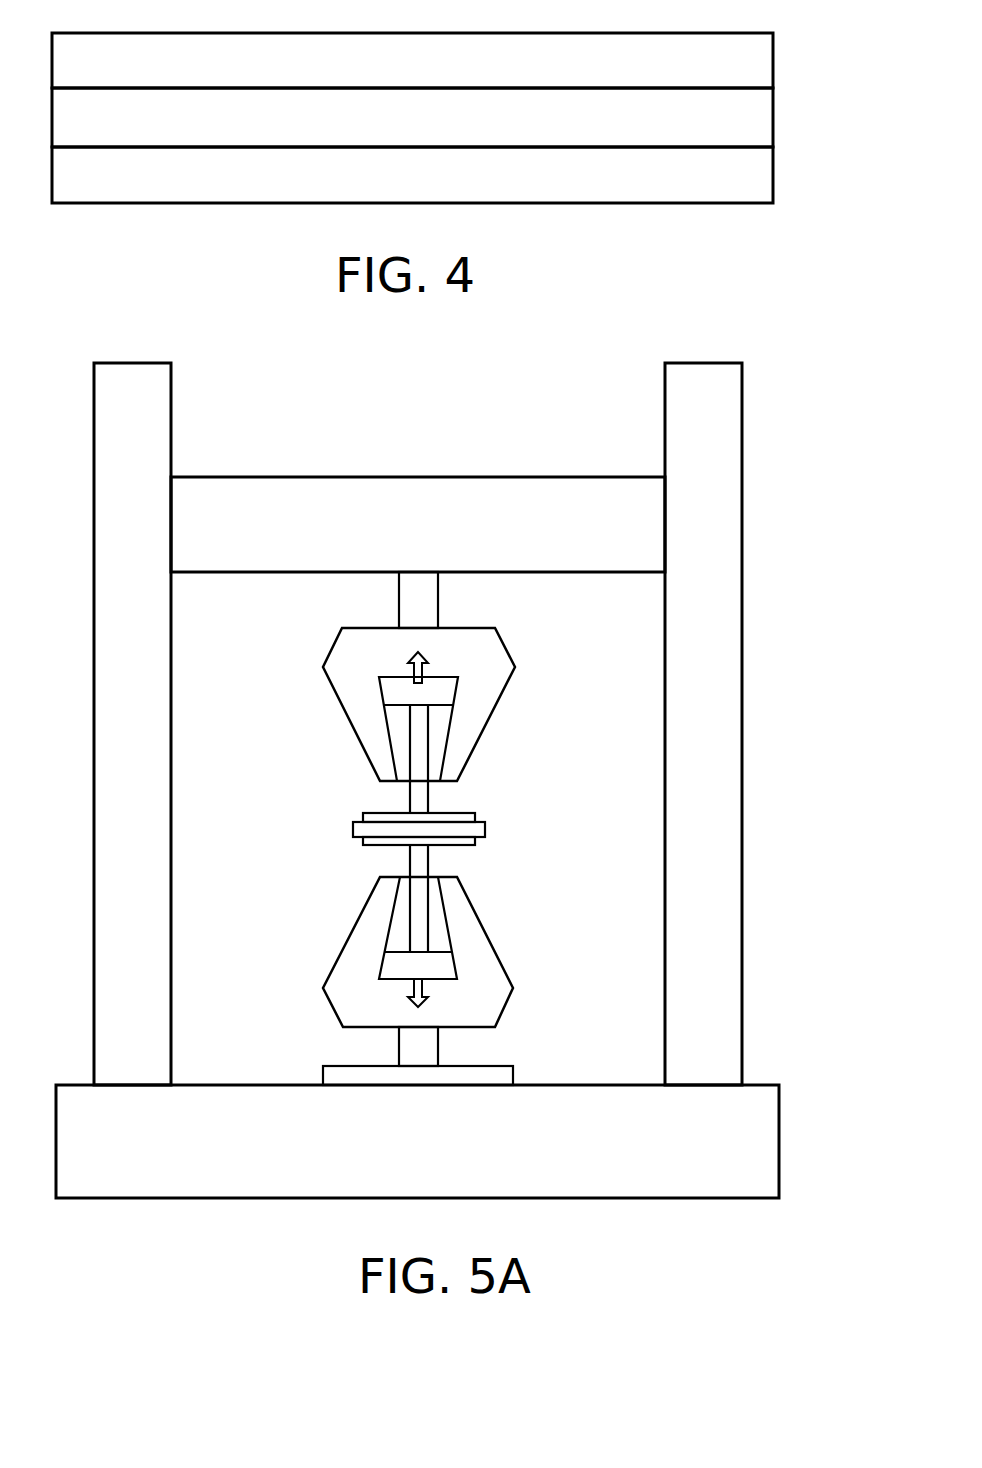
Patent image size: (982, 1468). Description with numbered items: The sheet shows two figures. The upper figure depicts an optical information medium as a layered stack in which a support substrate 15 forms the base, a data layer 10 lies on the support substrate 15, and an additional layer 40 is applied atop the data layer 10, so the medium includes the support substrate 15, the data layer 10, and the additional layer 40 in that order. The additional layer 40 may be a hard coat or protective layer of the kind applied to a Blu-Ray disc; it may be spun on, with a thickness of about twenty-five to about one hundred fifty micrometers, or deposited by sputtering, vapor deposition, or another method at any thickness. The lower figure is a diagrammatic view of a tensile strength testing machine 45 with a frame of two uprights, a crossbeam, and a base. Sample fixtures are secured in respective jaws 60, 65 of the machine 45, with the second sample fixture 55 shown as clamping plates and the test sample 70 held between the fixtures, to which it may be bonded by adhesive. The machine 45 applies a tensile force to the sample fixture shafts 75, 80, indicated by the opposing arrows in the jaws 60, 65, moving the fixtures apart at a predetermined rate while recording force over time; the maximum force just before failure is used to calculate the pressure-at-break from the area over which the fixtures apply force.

In FIG. 4, the additional layer 40 is at (758, 63).
In FIG. 4, the data layer 10 is at (758, 119).
In FIG. 4, the support substrate 15 is at (758, 177).
In FIG. 5A, the tensile strength testing machine 45 is at (818, 378).
In FIG. 5A, the jaw 65 is at (490, 648).
In FIG. 5A, the jaw 60 is at (487, 978).
In FIG. 5A, the sample fixture shaft 80 is at (422, 754).
In FIG. 5A, the sample fixture shaft 75 is at (422, 921).
In FIG. 5A, the second sample fixture 55 is at (470, 815).
In FIG. 5A, the test sample 70 is at (477, 829).